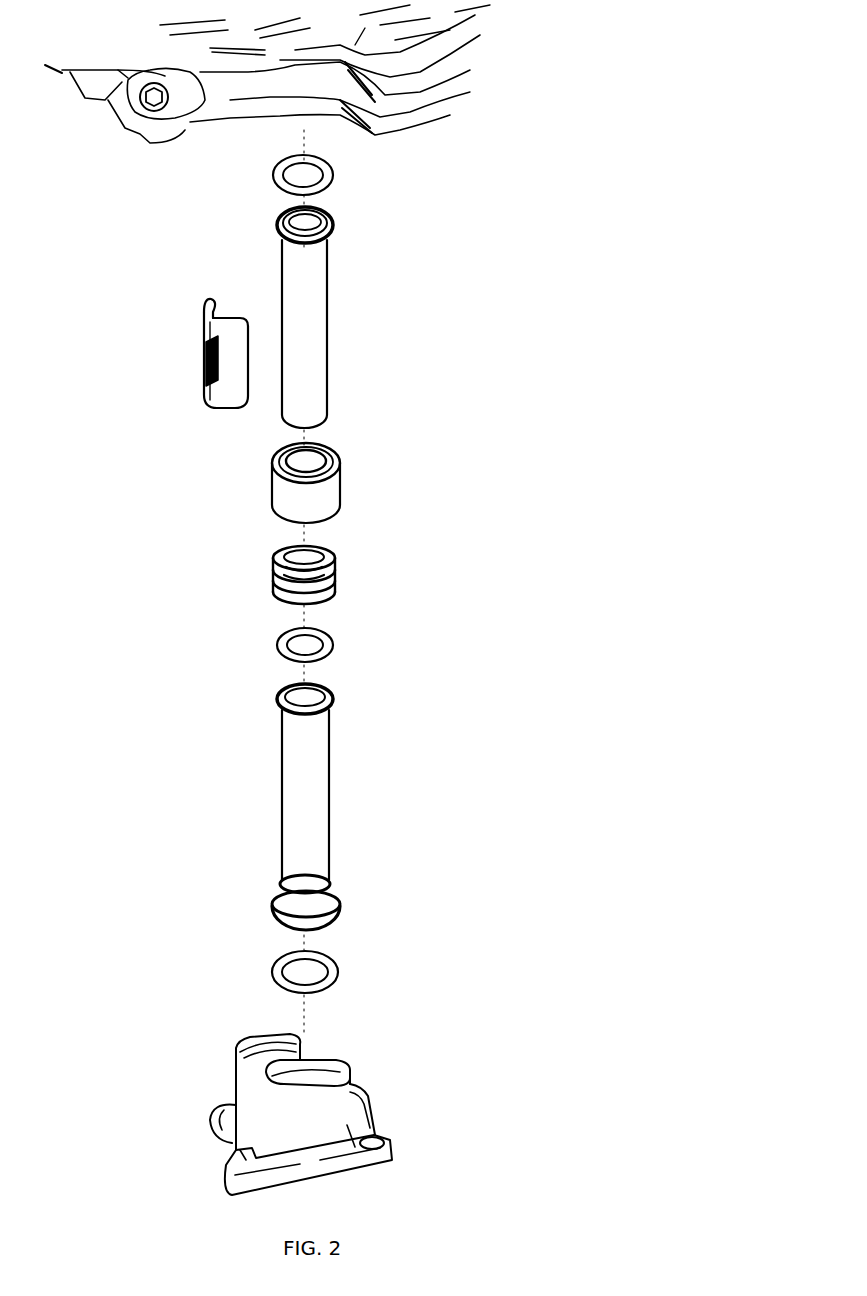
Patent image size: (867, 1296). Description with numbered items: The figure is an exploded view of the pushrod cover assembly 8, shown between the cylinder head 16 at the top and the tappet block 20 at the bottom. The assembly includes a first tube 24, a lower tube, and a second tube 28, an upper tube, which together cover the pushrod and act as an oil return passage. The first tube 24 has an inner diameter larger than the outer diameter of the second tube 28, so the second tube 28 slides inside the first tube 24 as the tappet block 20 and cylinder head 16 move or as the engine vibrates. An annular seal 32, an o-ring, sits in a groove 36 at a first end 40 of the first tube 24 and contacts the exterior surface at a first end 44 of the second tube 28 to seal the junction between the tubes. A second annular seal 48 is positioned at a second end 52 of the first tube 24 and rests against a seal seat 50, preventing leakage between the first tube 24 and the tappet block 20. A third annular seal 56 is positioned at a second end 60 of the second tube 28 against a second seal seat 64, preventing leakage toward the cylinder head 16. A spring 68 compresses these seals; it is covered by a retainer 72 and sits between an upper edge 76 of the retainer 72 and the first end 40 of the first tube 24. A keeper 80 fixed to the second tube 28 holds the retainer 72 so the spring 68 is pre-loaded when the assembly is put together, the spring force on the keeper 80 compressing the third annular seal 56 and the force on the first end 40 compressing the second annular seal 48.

The pushrod cover assembly 8 is at (500, 334).
The cylinder head 16 is at (422, 110).
The tappet block 20 is at (362, 1156).
The first tube 24 is at (282, 807).
The second tube 28 is at (327, 322).
The annular seal 32 is at (333, 652).
The groove 36 is at (283, 702).
The first end of the first tube 40 is at (240, 689).
The first end of the second tube 44 is at (367, 413).
The second annular seal 48 is at (337, 978).
The seal seat 50 is at (327, 915).
The second end of the first tube 52 is at (242, 916).
The third annular seal 56 is at (332, 177).
The second end of the second tube 60 is at (358, 231).
The second seal seat 64 is at (280, 222).
The spring 68 is at (334, 573).
The retainer 72 is at (250, 492).
The upper edge 76 is at (273, 463).
The keeper 80 is at (204, 357).